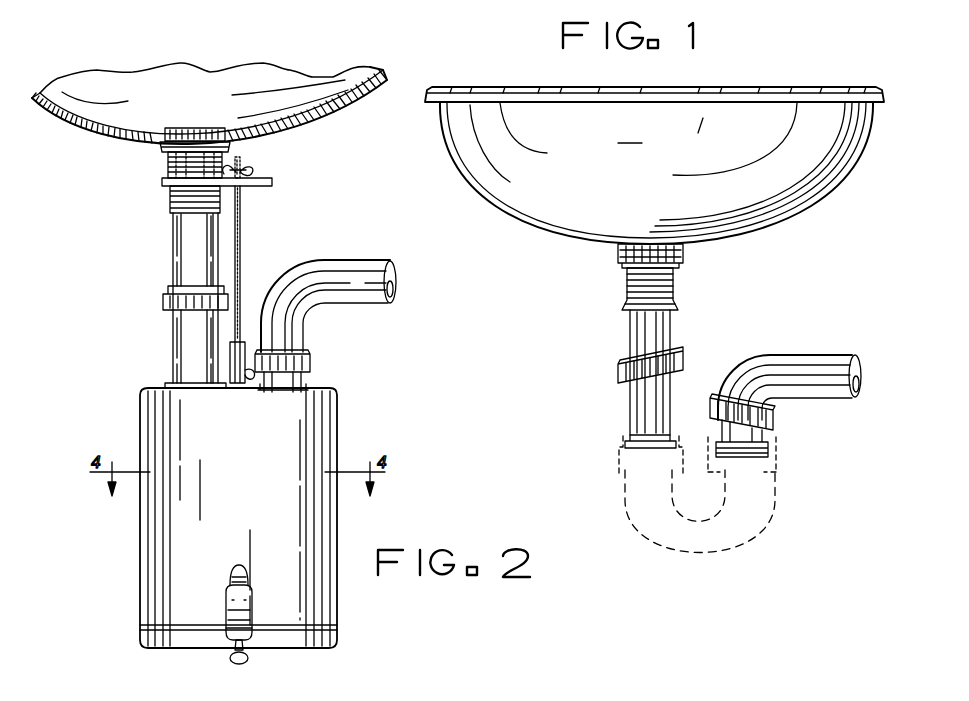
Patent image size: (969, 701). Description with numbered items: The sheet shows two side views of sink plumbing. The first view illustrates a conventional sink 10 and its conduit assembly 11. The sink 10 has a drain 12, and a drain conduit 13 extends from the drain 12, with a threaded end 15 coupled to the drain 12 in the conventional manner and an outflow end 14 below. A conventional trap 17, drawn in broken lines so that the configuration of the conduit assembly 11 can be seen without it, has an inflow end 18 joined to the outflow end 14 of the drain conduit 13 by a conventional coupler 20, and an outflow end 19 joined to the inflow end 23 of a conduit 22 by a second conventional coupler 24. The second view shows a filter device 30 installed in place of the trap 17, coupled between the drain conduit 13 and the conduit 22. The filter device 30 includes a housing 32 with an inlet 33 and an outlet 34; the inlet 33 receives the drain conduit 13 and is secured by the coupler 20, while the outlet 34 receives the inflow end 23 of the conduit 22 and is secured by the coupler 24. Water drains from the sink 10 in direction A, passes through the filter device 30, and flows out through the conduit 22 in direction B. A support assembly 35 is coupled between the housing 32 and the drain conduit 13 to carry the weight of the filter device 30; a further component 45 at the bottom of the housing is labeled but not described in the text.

In FIG. 2, the sink 10 is at (287, 68).
In FIG. 1, the sink 10 is at (654, 165).
In FIG. 2, the conduit assembly 11 is at (160, 203).
In FIG. 1, the conduit assembly 11 is at (592, 397).
In FIG. 2, the drain 12 is at (230, 147).
In FIG. 1, the drain 12 is at (684, 252).
In FIG. 2, the drain conduit 13 is at (173, 238).
In FIG. 1, the drain conduit 13 is at (672, 336).
In FIG. 2, the outflow end 14 is at (173, 270).
In FIG. 1, the outflow end 14 is at (632, 438).
In FIG. 2, the threaded end 15 is at (166, 170).
In FIG. 1, the threaded end 15 is at (623, 284).
In FIG. 1, the trap 17 is at (636, 512).
In FIG. 1, the inflow end 18 is at (622, 458).
In FIG. 2, the outflow end 19 is at (240, 272).
In FIG. 1, the outflow end 19 is at (760, 472).
In FIG. 2, the coupler 20 is at (165, 310).
In FIG. 1, the coupler 20 is at (616, 366).
In FIG. 2, the conduit 22 is at (335, 262).
In FIG. 1, the conduit 22 is at (808, 356).
In FIG. 2, the inflow end 23 is at (305, 336).
In FIG. 1, the inflow end 23 is at (768, 442).
In FIG. 2, the coupler 24 is at (312, 362).
In FIG. 1, the coupler 24 is at (775, 414).
In FIG. 2, the filter device 30 is at (331, 539).
In FIG. 2, the housing 32 is at (337, 428).
In FIG. 2, the inlet 33 is at (173, 352).
In FIG. 2, the outlet 34 is at (305, 384).
In FIG. 2, the support assembly 35 is at (275, 172).
In FIG. 2, the drain valve 45 is at (535, 690).